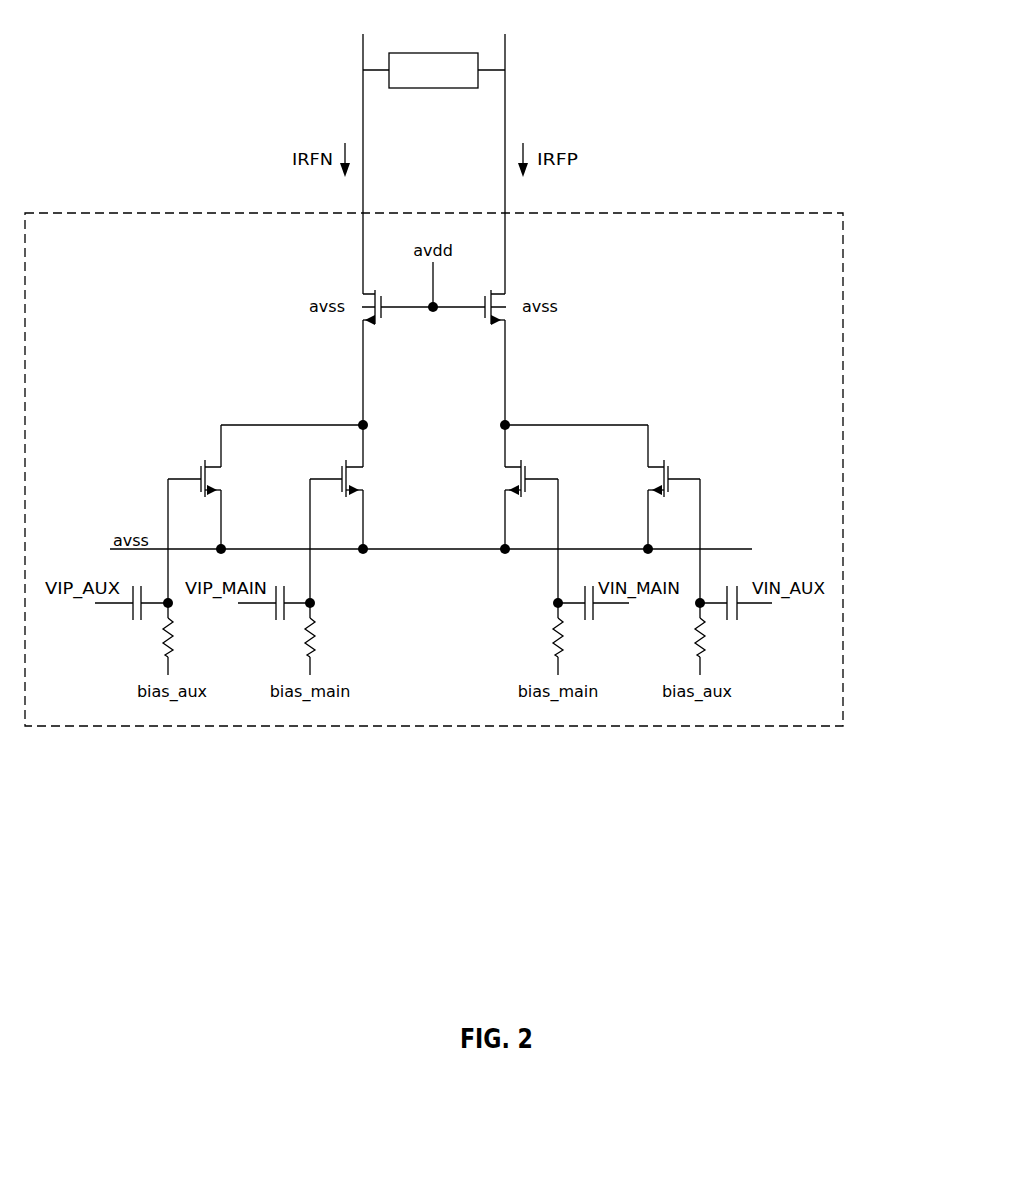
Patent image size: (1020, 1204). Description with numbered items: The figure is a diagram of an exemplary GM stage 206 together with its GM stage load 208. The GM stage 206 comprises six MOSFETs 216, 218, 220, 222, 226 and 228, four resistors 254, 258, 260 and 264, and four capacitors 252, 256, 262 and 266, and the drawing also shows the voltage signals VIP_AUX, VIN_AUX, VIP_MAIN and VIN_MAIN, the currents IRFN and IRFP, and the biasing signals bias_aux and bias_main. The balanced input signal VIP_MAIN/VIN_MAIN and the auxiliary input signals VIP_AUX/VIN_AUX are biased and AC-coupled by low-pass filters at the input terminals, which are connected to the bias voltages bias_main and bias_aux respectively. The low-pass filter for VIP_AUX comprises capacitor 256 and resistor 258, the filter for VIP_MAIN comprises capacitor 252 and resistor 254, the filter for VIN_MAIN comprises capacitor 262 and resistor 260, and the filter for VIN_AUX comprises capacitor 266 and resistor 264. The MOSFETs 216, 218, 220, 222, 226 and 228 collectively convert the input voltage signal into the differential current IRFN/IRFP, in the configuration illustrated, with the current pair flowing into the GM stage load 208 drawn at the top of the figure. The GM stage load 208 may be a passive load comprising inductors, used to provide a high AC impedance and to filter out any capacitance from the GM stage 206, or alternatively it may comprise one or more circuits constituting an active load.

The GM stage 206 is at (727, 213).
The GM stage load 208 is at (414, 53).
The MOSFET 216 is at (211, 460).
The MOSFET 218 is at (355, 460).
The MOSFET 220 is at (517, 460).
The MOSFET 222 is at (660, 460).
The MOSFET 226 is at (370, 294).
The MOSFET 228 is at (498, 321).
The capacitor 252 is at (132, 621).
The resistor 254 is at (176, 633).
The capacitor 256 is at (274, 617).
The resistor 258 is at (318, 615).
The resistor 260 is at (553, 630).
The capacitor 262 is at (594, 616).
The resistor 264 is at (705, 638).
The capacitor 266 is at (737, 622).